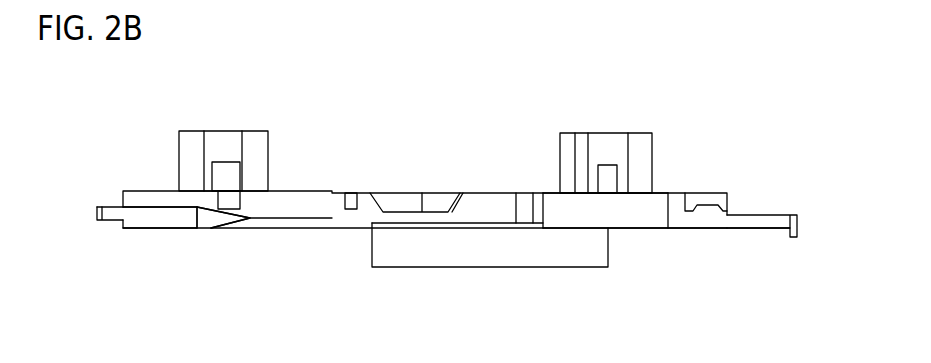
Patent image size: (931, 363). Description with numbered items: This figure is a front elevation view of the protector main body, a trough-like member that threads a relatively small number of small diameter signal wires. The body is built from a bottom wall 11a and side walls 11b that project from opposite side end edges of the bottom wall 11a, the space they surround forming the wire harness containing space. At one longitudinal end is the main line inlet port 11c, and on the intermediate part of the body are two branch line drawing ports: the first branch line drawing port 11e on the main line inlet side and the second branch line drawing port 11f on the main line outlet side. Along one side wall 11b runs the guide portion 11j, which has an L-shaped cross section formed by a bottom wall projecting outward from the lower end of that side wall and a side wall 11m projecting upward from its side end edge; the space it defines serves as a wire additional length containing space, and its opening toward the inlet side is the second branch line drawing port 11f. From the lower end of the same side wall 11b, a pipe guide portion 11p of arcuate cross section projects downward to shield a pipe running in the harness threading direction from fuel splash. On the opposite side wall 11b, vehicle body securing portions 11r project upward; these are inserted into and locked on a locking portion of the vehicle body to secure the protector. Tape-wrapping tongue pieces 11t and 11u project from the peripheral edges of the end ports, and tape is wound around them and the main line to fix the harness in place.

The vehicle body securing portion 11r is at (252, 131).
The main line inlet port 11c is at (727, 206).
The tape-wrapping tongue piece 11u is at (112, 220).
The guide portion 11j is at (175, 228).
The side wall 11m is at (257, 210).
The second branch line drawing port 11f is at (332, 210).
The pipe guide portion 11p is at (447, 264).
The first branch line drawing port 11e is at (537, 218).
The side wall 11b is at (632, 217).
The bottom wall 11a is at (698, 230).
The tape-wrapping tongue piece 11t is at (770, 223).